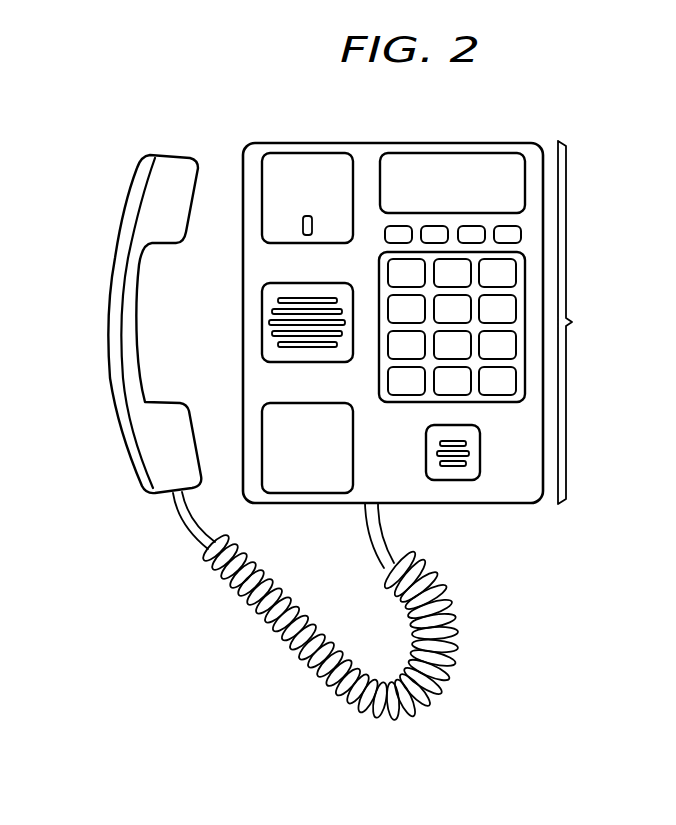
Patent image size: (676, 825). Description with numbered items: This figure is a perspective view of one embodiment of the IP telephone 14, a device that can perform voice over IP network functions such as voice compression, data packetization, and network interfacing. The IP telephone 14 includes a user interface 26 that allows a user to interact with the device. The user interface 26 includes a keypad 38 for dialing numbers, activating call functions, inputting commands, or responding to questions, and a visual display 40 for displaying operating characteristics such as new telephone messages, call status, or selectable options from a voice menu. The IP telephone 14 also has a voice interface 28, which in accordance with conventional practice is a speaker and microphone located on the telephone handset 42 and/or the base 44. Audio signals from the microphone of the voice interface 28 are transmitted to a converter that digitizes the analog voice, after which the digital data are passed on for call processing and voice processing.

The IP telephone 14 is at (274, 109).
The user interface 26 is at (582, 322).
The voice interface 28 is at (268, 302).
The keypad 38 is at (417, 401).
The visual display 40 is at (470, 160).
The telephone handset 42 is at (108, 322).
The base 44 is at (470, 503).